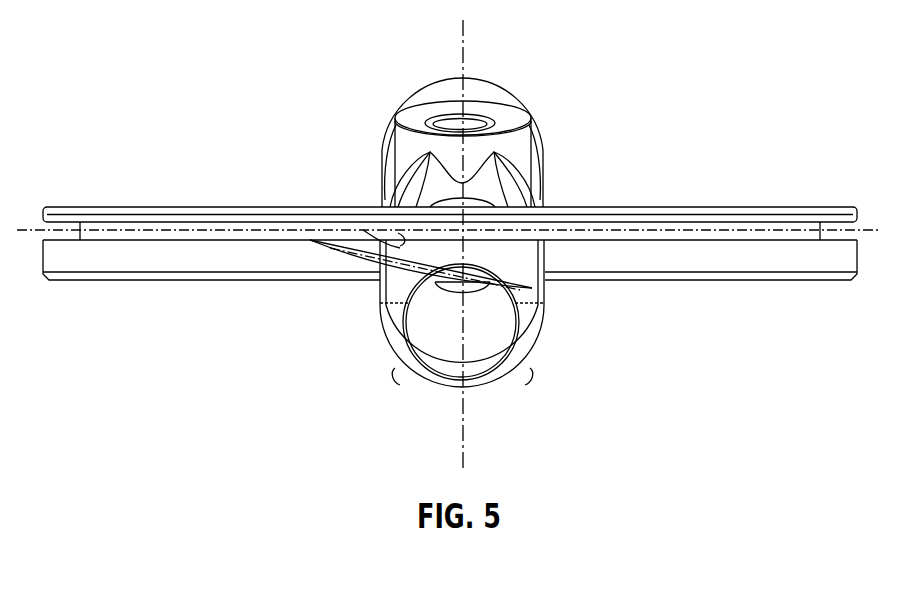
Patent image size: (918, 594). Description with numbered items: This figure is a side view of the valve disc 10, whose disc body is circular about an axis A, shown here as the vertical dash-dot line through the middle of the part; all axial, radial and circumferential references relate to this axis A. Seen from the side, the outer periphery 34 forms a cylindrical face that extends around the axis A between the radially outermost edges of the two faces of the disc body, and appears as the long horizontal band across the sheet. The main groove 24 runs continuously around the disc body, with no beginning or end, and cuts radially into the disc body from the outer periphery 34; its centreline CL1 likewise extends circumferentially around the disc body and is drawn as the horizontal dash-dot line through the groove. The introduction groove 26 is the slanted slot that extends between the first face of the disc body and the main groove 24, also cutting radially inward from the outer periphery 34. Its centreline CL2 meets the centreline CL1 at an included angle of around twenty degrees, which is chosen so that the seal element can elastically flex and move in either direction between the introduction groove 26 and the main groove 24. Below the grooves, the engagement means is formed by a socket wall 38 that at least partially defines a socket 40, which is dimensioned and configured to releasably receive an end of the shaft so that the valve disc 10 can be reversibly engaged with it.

The valve disc 10 is at (114, 64).
The axis A is at (466, 52).
The main groove 24 is at (836, 222).
The outer periphery 34 is at (107, 260).
The introduction groove 26 is at (388, 250).
The socket wall 38 is at (428, 376).
The socket 40 is at (484, 338).
The centreline of the main groove CL1 is at (663, 228).
The centreline of the introduction groove CL2 is at (380, 275).